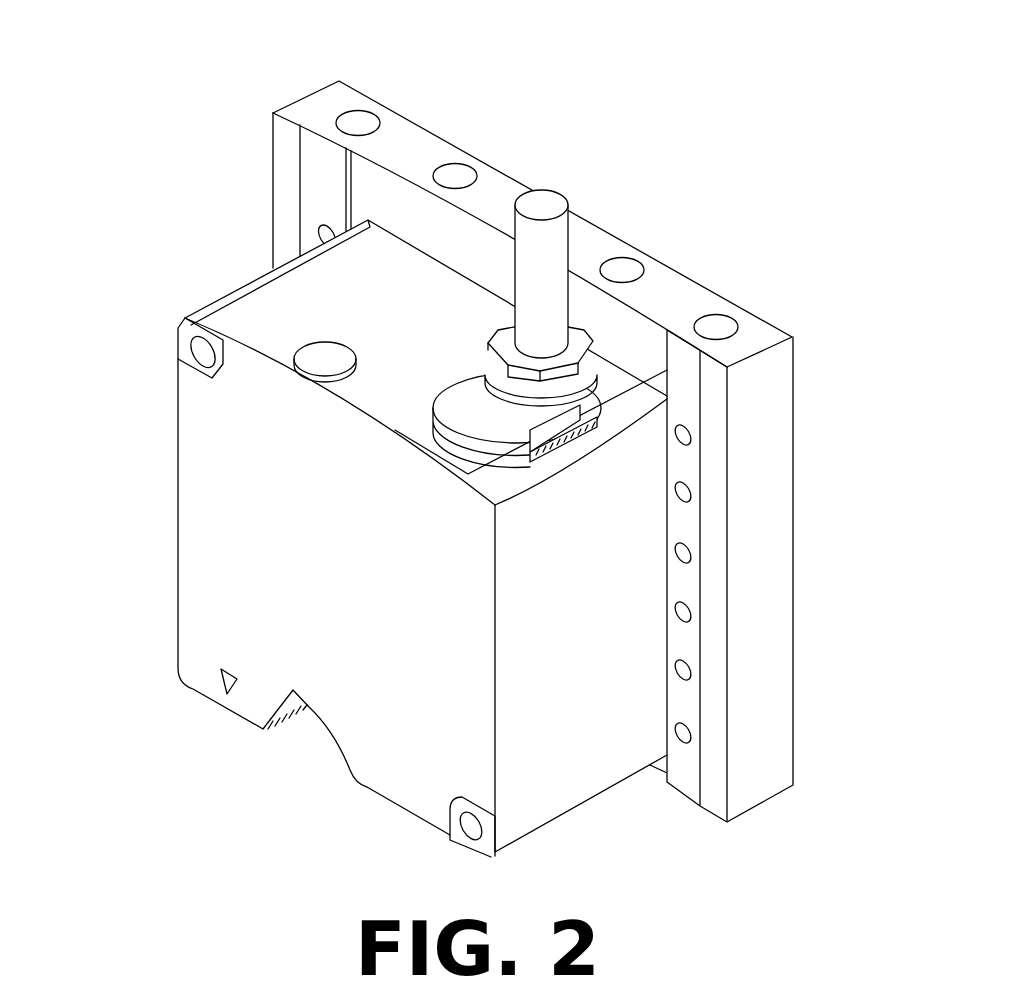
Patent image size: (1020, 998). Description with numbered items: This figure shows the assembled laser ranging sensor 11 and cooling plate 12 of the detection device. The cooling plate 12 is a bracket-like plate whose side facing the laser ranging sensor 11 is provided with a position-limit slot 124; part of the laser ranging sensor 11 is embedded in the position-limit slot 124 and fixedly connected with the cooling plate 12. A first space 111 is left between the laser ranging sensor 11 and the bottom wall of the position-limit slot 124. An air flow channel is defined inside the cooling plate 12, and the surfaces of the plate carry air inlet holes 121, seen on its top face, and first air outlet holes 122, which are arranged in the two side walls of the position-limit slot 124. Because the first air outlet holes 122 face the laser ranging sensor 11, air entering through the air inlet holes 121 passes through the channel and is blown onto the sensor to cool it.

The laser ranging sensor 11 is at (207, 553).
The cooling plate 12 is at (587, 240).
The first space 111 is at (475, 226).
The air inlet holes 121 is at (469, 133).
The first air outlet holes 122 is at (278, 227).
The position-limit slot 124 is at (382, 207).